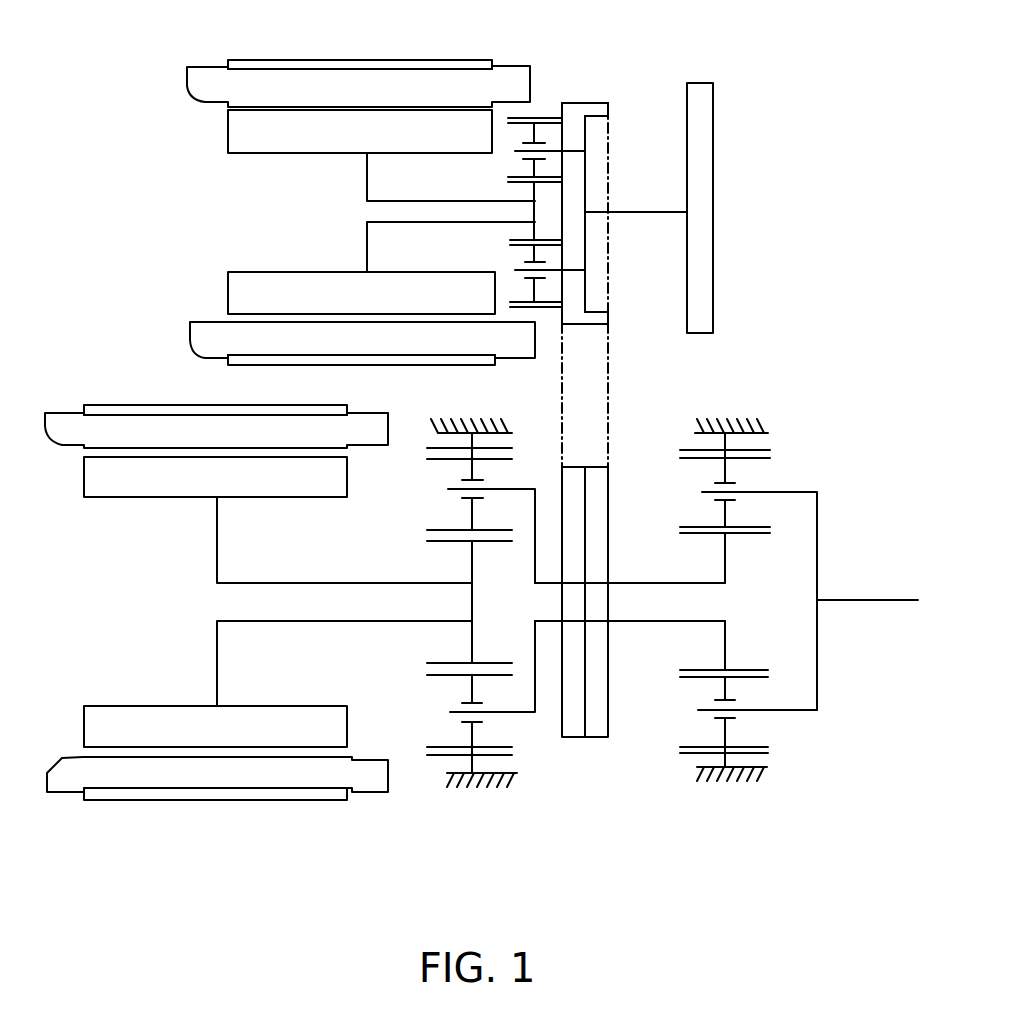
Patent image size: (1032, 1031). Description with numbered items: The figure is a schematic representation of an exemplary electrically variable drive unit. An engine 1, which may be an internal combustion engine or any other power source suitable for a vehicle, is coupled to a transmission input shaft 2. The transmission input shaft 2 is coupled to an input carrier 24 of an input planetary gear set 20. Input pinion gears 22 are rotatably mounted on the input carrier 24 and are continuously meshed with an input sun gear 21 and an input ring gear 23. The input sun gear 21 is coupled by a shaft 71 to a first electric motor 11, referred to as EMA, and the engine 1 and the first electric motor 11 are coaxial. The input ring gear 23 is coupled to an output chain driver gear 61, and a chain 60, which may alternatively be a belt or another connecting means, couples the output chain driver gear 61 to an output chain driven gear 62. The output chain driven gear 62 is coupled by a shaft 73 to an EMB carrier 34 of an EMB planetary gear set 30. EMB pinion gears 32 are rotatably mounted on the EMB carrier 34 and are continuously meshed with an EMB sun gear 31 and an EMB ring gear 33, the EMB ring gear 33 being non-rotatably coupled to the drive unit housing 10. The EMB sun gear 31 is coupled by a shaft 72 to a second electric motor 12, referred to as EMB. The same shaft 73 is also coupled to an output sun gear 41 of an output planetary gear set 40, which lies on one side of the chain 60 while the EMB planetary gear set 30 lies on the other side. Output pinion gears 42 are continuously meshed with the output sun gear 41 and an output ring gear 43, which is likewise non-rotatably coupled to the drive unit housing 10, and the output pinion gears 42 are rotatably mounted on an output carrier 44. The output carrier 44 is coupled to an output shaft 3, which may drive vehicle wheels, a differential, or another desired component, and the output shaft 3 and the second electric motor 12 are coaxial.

The engine 1 is at (715, 209).
The transmission input shaft 2 is at (657, 210).
The output shaft 3 is at (877, 600).
The drive unit housing 10 is at (478, 797).
The first electric motor 11 is at (198, 67).
The second electric motor 12 is at (55, 762).
The input planetary gear set 20 is at (563, 96).
The input sun gear 21 is at (548, 172).
The input pinion gears 22 is at (533, 163).
The input ring gear 23 is at (527, 118).
The input carrier 24 is at (585, 178).
The EMB planetary gear set 30 is at (525, 762).
The EMB sun gear 31 is at (485, 542).
The EMB pinion gears 32 is at (470, 517).
The EMB ring gear 33 is at (437, 448).
The EMB carrier 34 is at (535, 532).
The output planetary gear set 40 is at (782, 760).
The output sun gear 41 is at (747, 533).
The output pinion gears 42 is at (723, 472).
The output ring gear 43 is at (760, 450).
The output carrier 44 is at (818, 535).
The chain 60 is at (607, 440).
The output chain driver gear 61 is at (592, 102).
The output chain driven gear 62 is at (593, 467).
The shaft 71 is at (400, 222).
The shaft 72 is at (340, 583).
The shaft 73 is at (633, 583).